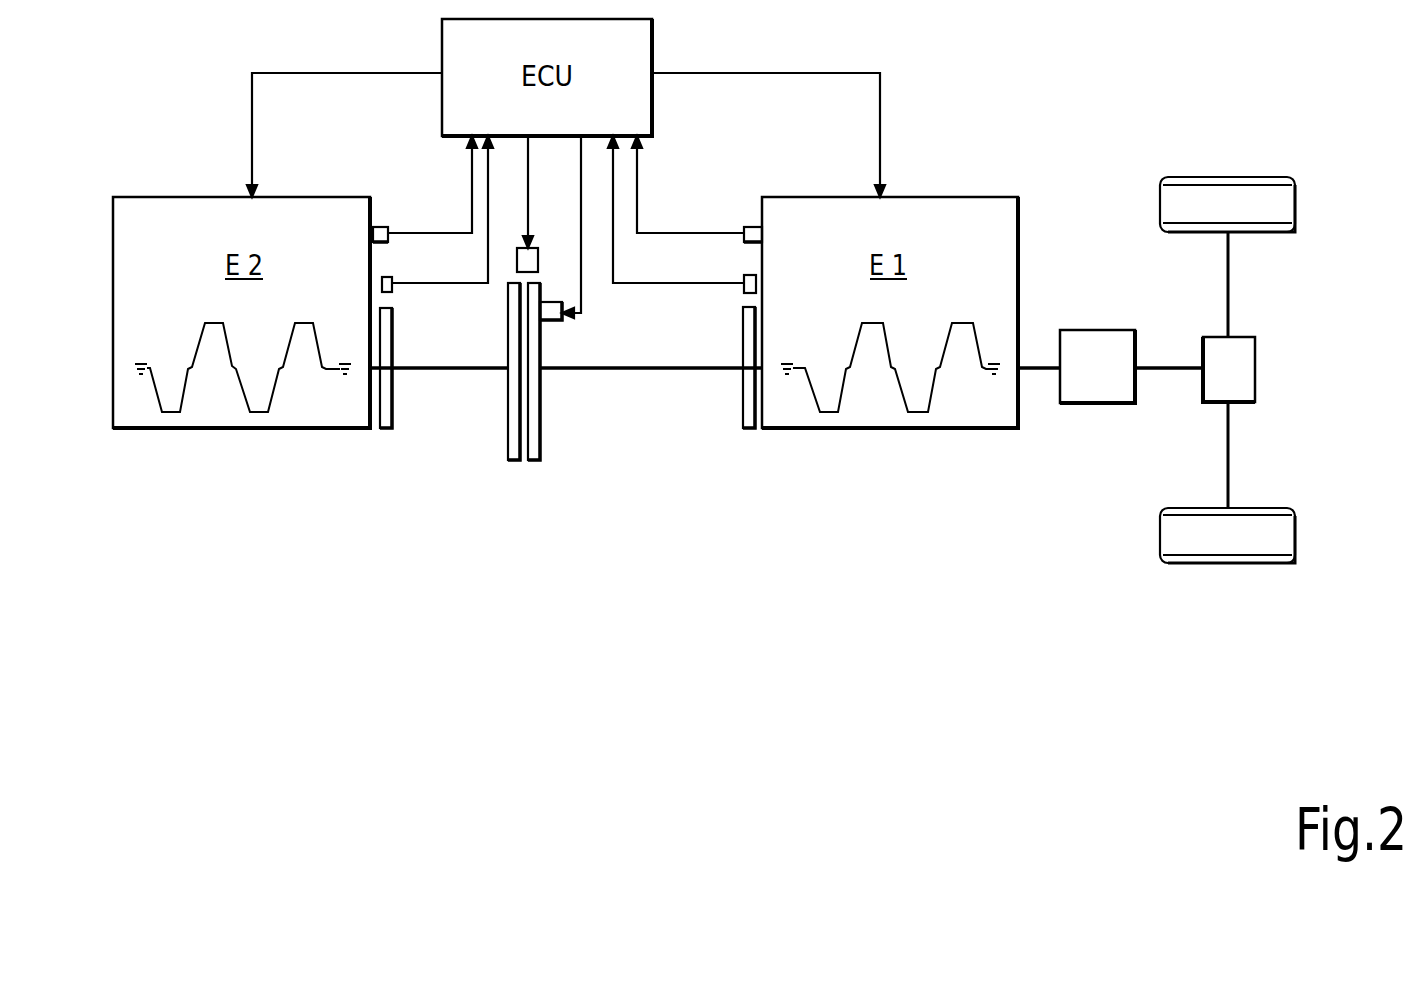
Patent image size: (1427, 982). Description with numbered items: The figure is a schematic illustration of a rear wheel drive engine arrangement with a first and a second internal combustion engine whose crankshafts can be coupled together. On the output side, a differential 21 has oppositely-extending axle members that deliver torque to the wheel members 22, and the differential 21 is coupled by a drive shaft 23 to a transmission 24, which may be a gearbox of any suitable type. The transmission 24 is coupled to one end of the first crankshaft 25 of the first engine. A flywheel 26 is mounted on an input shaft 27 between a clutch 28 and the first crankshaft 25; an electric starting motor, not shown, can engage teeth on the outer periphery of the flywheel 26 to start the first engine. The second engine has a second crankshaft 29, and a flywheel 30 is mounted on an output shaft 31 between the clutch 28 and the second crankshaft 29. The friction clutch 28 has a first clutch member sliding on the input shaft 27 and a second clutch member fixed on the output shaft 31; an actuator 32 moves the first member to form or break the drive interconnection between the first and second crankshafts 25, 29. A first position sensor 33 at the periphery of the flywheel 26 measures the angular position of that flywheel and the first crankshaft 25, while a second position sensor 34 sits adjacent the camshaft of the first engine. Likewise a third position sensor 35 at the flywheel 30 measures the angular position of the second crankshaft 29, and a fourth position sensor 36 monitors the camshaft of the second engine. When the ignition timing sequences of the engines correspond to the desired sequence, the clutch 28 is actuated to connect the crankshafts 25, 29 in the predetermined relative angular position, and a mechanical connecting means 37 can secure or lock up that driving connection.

The differential 21 is at (1245, 381).
The wheel members 22 is at (1205, 177).
The drive shaft 23 is at (1168, 370).
The transmission 24 is at (1113, 381).
The first crankshaft 25 is at (917, 413).
The flywheel 26 is at (752, 432).
The input shaft 27 is at (695, 370).
The clutch 28 is at (508, 418).
The second crankshaft 29 is at (258, 413).
The flywheel 30 is at (387, 430).
The output shaft 31 is at (438, 370).
The actuator 32 is at (552, 322).
The first position sensor 33 is at (747, 278).
The second position sensor 34 is at (757, 237).
The third position sensor 35 is at (392, 280).
The fourth position sensor 36 is at (377, 228).
The mechanical connecting means 37 is at (517, 263).